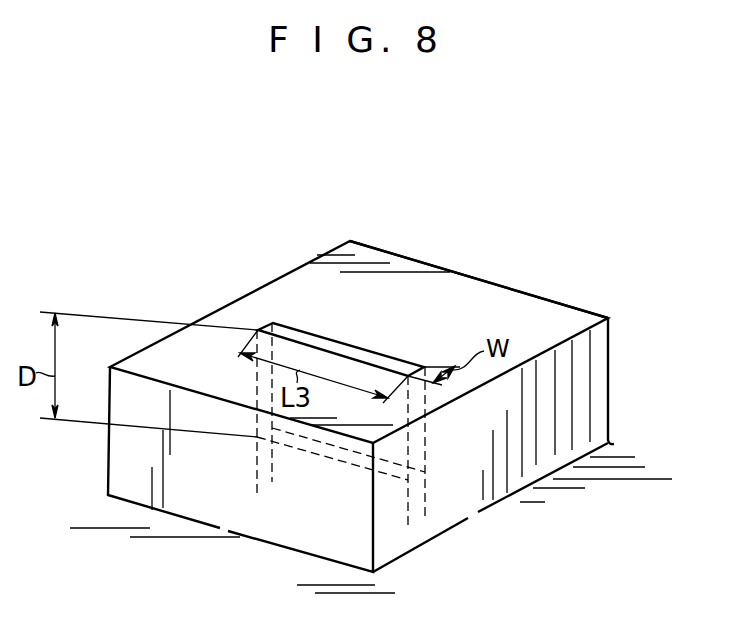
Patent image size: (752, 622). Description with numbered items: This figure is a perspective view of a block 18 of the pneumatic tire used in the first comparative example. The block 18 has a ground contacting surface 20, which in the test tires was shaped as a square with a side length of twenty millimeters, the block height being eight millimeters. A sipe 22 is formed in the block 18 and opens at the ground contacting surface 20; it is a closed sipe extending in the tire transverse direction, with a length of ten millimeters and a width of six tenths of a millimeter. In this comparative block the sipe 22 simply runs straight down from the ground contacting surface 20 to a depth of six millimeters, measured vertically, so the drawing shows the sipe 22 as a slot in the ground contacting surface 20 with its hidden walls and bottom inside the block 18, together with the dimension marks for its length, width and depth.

The block 18 is at (263, 255).
The ground contacting surface 20 is at (518, 303).
The sipe 22 is at (396, 363).